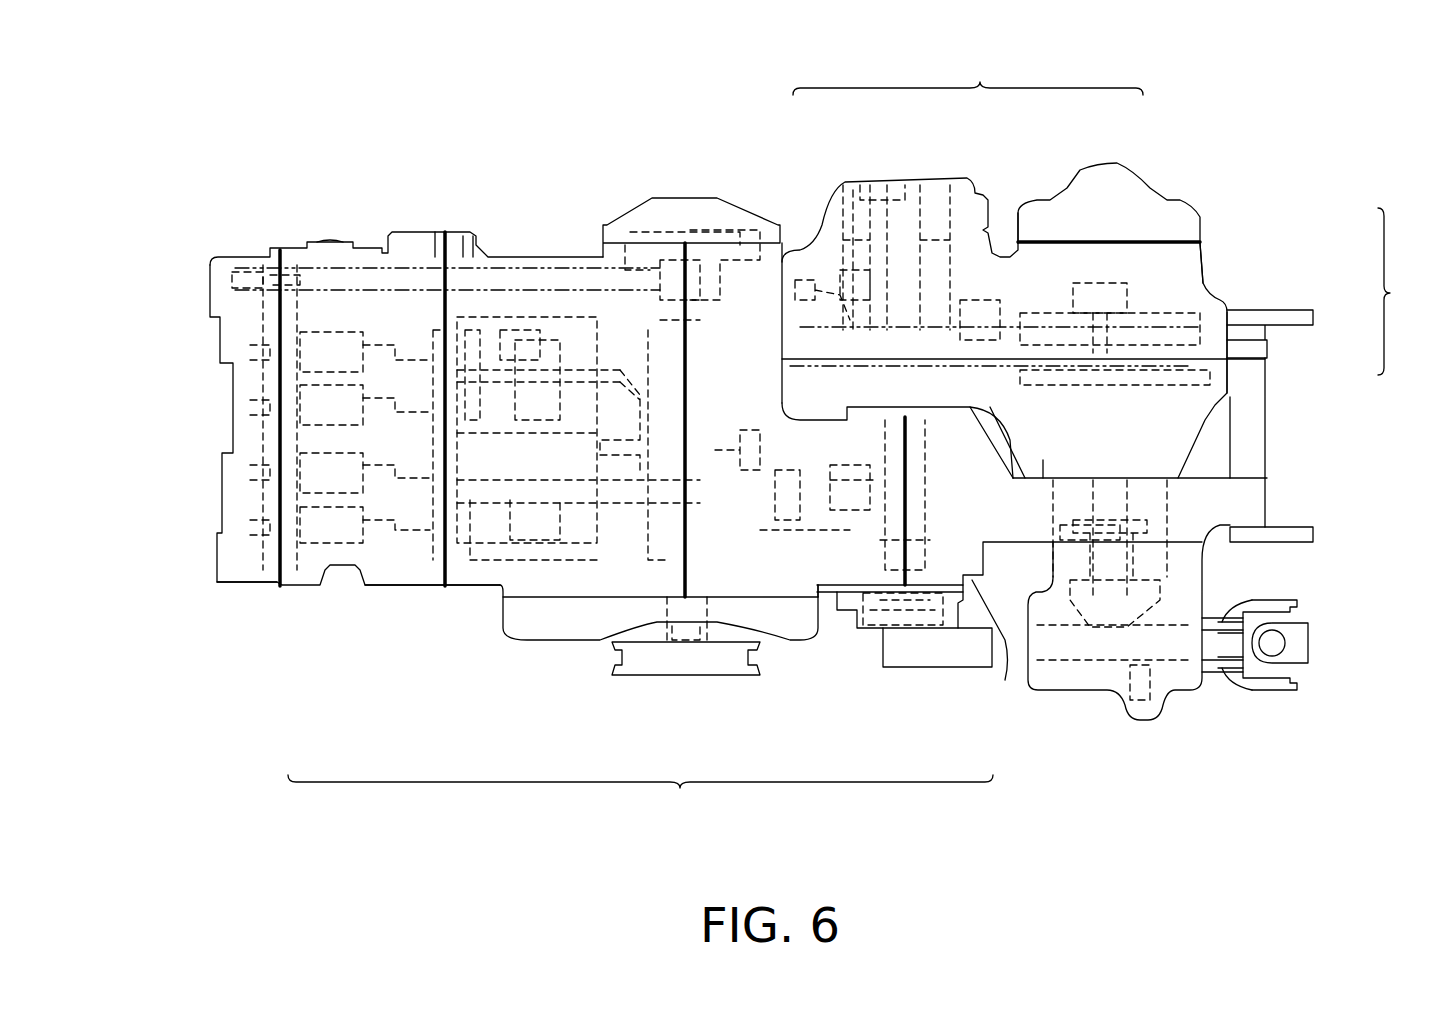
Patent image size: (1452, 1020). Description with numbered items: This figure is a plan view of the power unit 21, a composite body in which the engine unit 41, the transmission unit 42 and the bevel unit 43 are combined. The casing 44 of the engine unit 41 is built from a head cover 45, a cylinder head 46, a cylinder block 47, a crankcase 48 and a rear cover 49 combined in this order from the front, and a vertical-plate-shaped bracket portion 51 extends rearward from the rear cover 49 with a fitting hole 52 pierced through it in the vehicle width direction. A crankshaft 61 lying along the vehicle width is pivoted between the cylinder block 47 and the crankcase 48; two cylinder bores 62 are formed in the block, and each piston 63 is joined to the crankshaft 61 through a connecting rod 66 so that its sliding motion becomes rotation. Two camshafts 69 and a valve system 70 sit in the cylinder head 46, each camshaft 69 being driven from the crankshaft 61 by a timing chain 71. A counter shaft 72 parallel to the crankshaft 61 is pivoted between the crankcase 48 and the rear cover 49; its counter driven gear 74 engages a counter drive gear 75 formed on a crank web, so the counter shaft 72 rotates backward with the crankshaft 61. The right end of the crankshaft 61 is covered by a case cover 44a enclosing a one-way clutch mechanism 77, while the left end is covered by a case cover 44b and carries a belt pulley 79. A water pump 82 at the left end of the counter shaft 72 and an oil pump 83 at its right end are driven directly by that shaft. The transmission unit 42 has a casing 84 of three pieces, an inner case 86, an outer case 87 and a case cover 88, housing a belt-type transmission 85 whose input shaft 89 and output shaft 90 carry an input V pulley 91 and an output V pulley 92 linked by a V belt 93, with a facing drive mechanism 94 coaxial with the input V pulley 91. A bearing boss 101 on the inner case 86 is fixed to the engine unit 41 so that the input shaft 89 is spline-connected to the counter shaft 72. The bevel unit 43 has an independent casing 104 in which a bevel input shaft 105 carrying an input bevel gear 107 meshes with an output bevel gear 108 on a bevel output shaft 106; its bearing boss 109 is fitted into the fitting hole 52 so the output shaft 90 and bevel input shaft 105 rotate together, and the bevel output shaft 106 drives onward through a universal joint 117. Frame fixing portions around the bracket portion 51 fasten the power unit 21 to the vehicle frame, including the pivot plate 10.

The pivot plate 10 is at (1313, 535).
The power unit 21 is at (770, 185).
The engine unit 41 is at (183, 276).
The transmission unit 42 is at (1200, 178).
The bevel unit 43 is at (1150, 735).
The casing 44 is at (640, 798).
The case cover 44a is at (680, 200).
The case cover 44b is at (558, 642).
The head cover 45 is at (243, 585).
The cylinder head 46 is at (405, 585).
The cylinder block 47 is at (478, 585).
The crankcase 48 is at (788, 585).
The rear cover 49 is at (1005, 680).
The bracket portion 51 is at (1267, 490).
The fitting hole 52 is at (1063, 557).
The crankshaft 61 is at (653, 323).
The cylinder bore 62 is at (508, 262).
The piston 63 is at (483, 250).
The connecting rod 66 is at (540, 262).
The camshaft 69 is at (232, 385).
The valve system 70 is at (330, 438).
The timing chain 71 is at (376, 270).
The counter shaft 72 is at (878, 530).
The counter driven gear 74 is at (805, 500).
The counter drive gear 75 is at (765, 520).
The one-way clutch mechanism 77 is at (723, 228).
The belt pulley 79 is at (720, 676).
The water pump 82 is at (940, 668).
The oil pump 83 is at (852, 500).
The casing 84 is at (1401, 291).
The belt-type transmission 85 is at (968, 71).
The inner case 86 is at (1228, 380).
The outer case 87 is at (1220, 280).
The case cover 88 is at (1203, 215).
The input shaft 89 is at (900, 185).
The output shaft 90 is at (1110, 313).
The input V pulley 91 is at (1003, 255).
The output V pulley 92 is at (1077, 283).
The V belt 93 is at (1012, 330).
The facing drive mechanism 94 is at (842, 252).
The bearing boss 101 is at (1012, 430).
The casing 104 is at (1195, 693).
The bevel input shaft 105 is at (1143, 563).
The bevel output shaft 106 is at (1077, 627).
The input bevel gear 107 is at (1053, 577).
The output bevel gear 108 is at (1133, 680).
The bearing boss 109 is at (1110, 560).
The universal joint 117 is at (1272, 690).